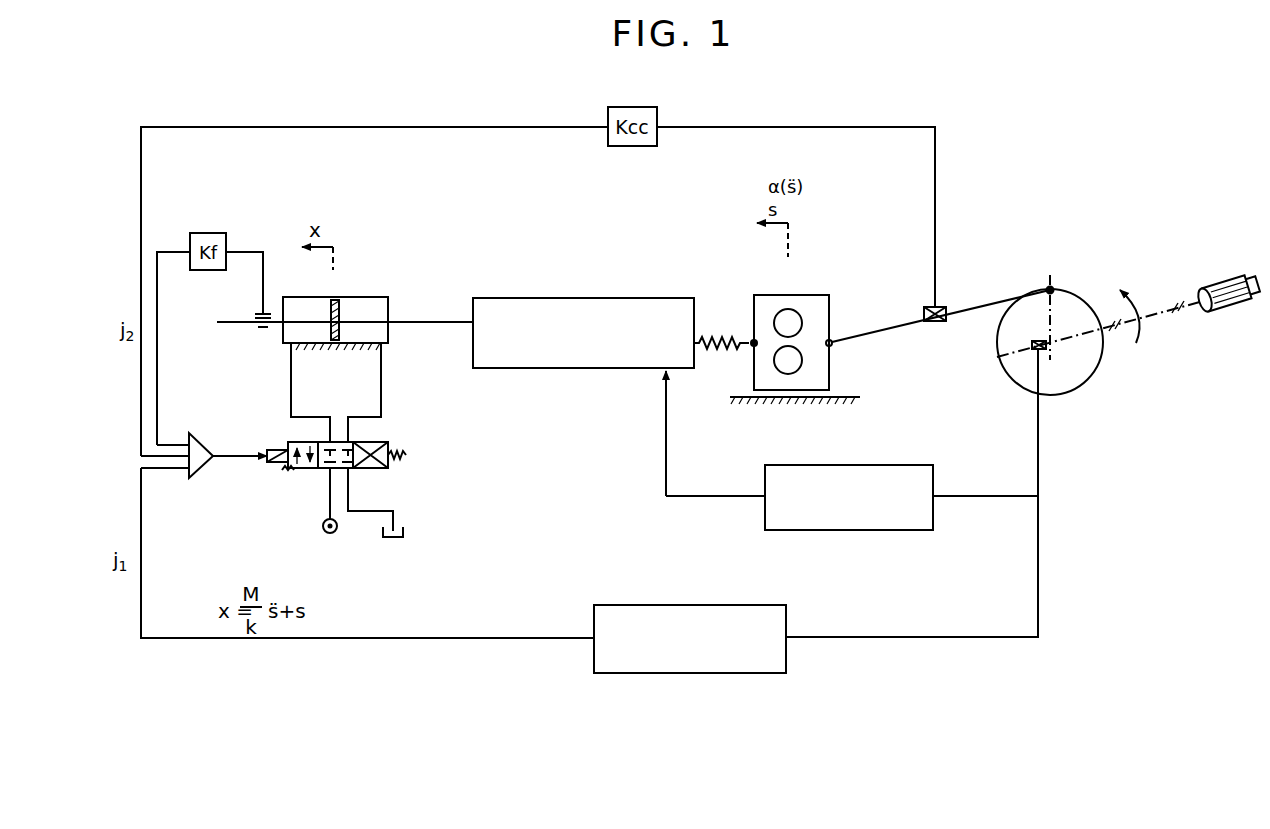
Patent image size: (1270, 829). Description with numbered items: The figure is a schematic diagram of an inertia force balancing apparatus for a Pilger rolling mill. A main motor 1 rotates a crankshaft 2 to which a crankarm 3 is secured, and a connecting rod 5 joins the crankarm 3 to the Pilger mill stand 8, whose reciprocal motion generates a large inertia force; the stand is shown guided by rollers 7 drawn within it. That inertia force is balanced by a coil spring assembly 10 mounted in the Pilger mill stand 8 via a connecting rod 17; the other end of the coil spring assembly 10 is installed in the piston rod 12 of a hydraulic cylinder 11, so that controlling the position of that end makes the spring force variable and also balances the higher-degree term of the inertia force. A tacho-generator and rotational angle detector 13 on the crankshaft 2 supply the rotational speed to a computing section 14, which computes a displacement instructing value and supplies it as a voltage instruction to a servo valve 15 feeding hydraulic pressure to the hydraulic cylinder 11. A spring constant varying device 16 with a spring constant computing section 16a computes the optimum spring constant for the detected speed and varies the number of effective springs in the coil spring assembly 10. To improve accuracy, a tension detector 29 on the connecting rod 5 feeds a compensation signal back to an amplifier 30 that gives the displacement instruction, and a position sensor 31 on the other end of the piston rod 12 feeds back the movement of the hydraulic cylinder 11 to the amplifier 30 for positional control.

The main motor 1 is at (1213, 283).
The crankshaft 2 is at (1095, 340).
The crankarm 3 is at (1060, 305).
The connecting rod 5 is at (890, 325).
The rollers 7 is at (797, 313).
The Pilger mill stand 8 is at (829, 376).
The coil spring assembly 10 is at (733, 340).
The hydraulic cylinder 11 is at (370, 297).
The piston rod 12 is at (437, 322).
The rotational angle detector 13 is at (1038, 347).
The computing section 14 is at (594, 660).
The servo valve 15 is at (305, 468).
The spring constant varying device 16 is at (666, 298).
The spring constant computing section 16a is at (890, 465).
The connecting rod 17 is at (742, 346).
The tension detector 29 is at (945, 310).
The amplifier 30 is at (200, 472).
The position sensor 31 is at (263, 331).